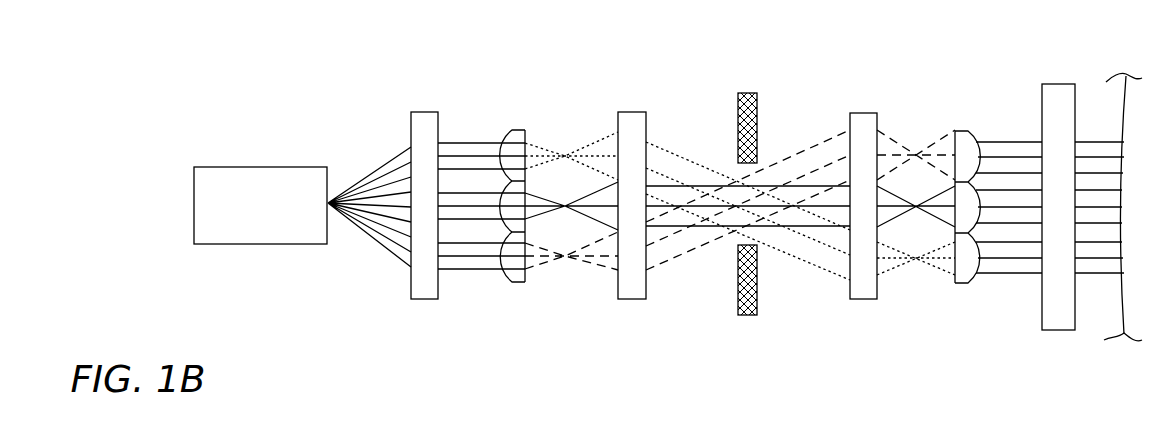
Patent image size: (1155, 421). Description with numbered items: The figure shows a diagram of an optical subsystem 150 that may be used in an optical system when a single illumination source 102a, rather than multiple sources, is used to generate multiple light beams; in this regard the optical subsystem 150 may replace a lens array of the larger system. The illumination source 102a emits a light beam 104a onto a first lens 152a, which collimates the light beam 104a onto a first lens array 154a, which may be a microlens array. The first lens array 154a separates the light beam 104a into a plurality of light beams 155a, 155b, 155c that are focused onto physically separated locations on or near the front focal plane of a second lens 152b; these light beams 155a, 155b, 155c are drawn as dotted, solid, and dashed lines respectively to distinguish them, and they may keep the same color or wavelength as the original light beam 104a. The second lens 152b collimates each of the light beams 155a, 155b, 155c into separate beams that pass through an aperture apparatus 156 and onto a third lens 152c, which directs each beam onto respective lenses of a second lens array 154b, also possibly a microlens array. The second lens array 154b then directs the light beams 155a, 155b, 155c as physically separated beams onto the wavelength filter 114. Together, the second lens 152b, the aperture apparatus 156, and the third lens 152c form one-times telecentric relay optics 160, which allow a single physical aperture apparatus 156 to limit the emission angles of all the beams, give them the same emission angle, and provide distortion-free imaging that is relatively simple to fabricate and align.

The illumination source 102a is at (260, 205).
The light beam 104a is at (360, 236).
The optical subsystem 150 is at (350, 102).
The first lens 152a is at (424, 112).
The first lens array 154a is at (514, 128).
The light beam 155a is at (567, 157).
The light beam 155b is at (567, 209).
The light beam 155c is at (568, 258).
The second lens 152b is at (640, 300).
The aperture apparatus 156 is at (751, 93).
The third lens 152c is at (862, 174).
The 1× telecentric relay optics 160 is at (807, 199).
The second lens array 154b is at (960, 130).
The wavelength filter 114 is at (1058, 332).